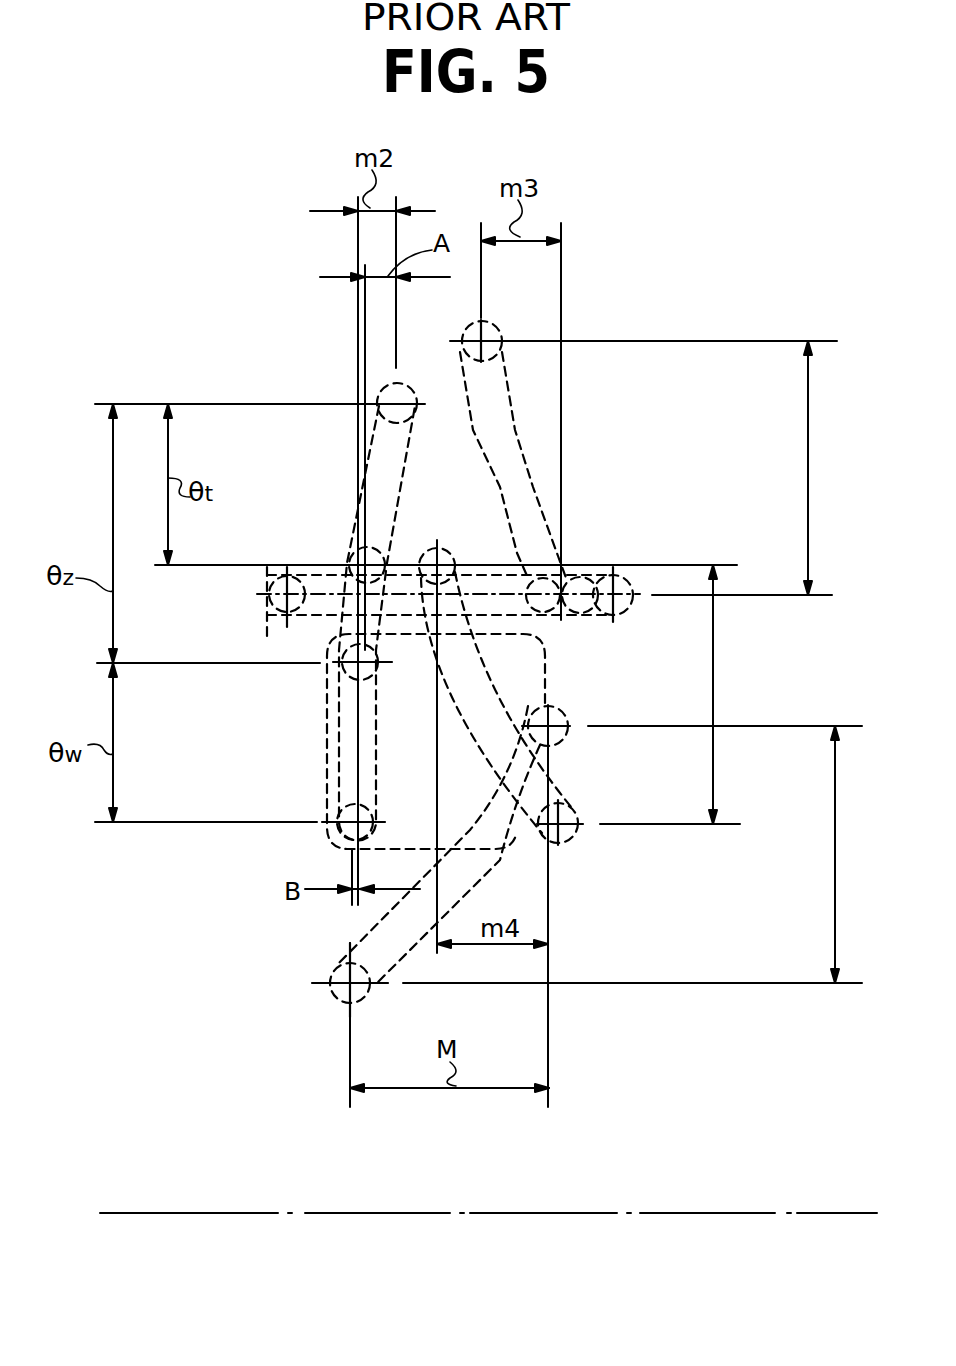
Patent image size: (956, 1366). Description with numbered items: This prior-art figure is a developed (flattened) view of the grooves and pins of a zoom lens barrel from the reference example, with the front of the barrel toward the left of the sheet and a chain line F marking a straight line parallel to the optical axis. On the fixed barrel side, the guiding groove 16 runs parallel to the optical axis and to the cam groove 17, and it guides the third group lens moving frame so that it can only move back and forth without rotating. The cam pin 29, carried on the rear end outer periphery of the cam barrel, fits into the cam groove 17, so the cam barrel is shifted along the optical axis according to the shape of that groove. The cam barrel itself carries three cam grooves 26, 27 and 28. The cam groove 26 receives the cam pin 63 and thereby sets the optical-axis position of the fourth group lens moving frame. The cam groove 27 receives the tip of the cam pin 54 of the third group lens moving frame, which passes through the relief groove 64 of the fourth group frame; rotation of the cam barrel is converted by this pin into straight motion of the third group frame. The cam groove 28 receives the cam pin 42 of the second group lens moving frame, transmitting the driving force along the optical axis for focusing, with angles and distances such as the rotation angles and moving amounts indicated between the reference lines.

The guiding groove 16 is at (622, 614).
The cam groove 17 is at (497, 862).
The cam groove 26 is at (497, 700).
The cam groove 27 is at (527, 468).
The cam groove 28 is at (350, 523).
The cam pin 29 is at (567, 740).
The cam pin 42 is at (386, 398).
The cam pin 54 is at (585, 562).
The cam pin 63 is at (570, 835).
The relief groove 64 is at (497, 565).
The chain line F is at (802, 1213).